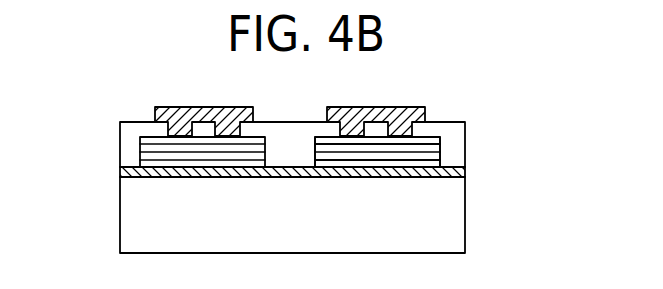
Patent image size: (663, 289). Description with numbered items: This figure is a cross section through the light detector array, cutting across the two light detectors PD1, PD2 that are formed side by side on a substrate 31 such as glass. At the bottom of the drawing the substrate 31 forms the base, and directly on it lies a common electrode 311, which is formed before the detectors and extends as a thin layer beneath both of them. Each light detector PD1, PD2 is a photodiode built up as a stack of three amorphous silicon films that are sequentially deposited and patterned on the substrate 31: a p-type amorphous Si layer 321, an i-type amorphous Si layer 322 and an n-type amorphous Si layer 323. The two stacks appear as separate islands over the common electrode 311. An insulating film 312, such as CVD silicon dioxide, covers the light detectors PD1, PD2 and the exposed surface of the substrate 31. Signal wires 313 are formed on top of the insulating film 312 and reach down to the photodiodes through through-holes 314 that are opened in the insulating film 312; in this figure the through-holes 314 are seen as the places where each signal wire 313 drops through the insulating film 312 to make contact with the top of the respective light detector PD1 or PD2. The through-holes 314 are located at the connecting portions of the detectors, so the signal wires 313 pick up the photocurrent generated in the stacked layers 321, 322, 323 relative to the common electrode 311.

The substrate 31 is at (455, 227).
The common electrode 311 is at (283, 172).
The insulating film 312 is at (128, 136).
The signal wires 313 is at (289, 98).
The through-holes 314 is at (175, 118).
The p-type amorphous Si layer 321 is at (433, 162).
The i-type amorphous Si layer 322 is at (433, 153).
The n-type amorphous Si layer 323 is at (433, 144).
The light detector PD1 is at (205, 157).
The light detector PD2 is at (378, 158).